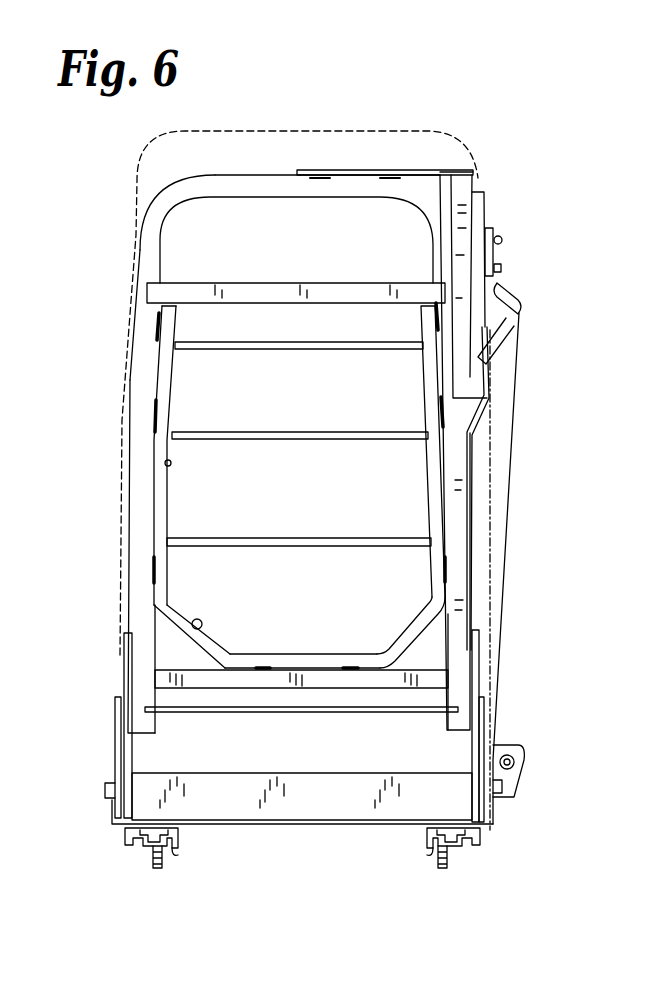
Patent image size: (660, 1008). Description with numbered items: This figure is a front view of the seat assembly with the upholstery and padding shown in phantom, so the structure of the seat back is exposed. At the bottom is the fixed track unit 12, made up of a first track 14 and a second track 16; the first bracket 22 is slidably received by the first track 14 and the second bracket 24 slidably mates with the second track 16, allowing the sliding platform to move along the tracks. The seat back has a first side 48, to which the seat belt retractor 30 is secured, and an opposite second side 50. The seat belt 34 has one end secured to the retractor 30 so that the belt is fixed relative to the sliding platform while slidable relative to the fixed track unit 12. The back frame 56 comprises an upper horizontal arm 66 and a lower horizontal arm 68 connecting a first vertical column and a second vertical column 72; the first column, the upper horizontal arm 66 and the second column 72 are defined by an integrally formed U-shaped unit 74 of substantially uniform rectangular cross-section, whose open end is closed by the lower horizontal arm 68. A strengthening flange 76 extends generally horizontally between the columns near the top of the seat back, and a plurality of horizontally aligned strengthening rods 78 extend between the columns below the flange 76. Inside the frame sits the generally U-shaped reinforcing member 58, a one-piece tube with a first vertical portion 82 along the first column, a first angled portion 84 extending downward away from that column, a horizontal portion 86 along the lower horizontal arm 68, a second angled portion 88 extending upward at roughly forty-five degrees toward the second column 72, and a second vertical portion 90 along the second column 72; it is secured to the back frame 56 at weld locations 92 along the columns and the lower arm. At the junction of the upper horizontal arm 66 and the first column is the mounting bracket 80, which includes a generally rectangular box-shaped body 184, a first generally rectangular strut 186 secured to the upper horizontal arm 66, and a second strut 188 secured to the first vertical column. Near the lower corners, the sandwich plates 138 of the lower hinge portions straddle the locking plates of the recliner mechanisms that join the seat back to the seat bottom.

The fixed track unit 12 is at (468, 858).
The first track 14 is at (474, 843).
The second track 16 is at (143, 852).
The first bracket 22 is at (428, 839).
The second bracket 24 is at (172, 838).
The seat belt retractor 30 is at (509, 749).
The seat belt 34 is at (519, 466).
The first side 48 is at (476, 176).
The second side 50 is at (133, 271).
The back frame 56 is at (131, 385).
The reinforcing member 58 is at (425, 482).
The upper horizontal arm 66 is at (228, 174).
The lower horizontal arm 68 is at (248, 682).
The second vertical column 72 is at (130, 487).
The U-shaped unit 74 is at (278, 168).
The strengthening flange 76 is at (262, 284).
The strengthening rods 78 is at (268, 346).
The mounting bracket 80 is at (448, 170).
The first vertical portion 82 is at (454, 381).
The first angled portion 84 is at (442, 615).
The horizontal portion 86 is at (315, 652).
The second angled portion 88 is at (198, 622).
The second vertical portion 90 is at (165, 454).
The weld locations 92 is at (158, 326).
The sandwich plates 138 is at (114, 749).
The box-shaped body 184 is at (479, 196).
The first strut 186 is at (409, 170).
The second strut 188 is at (474, 440).